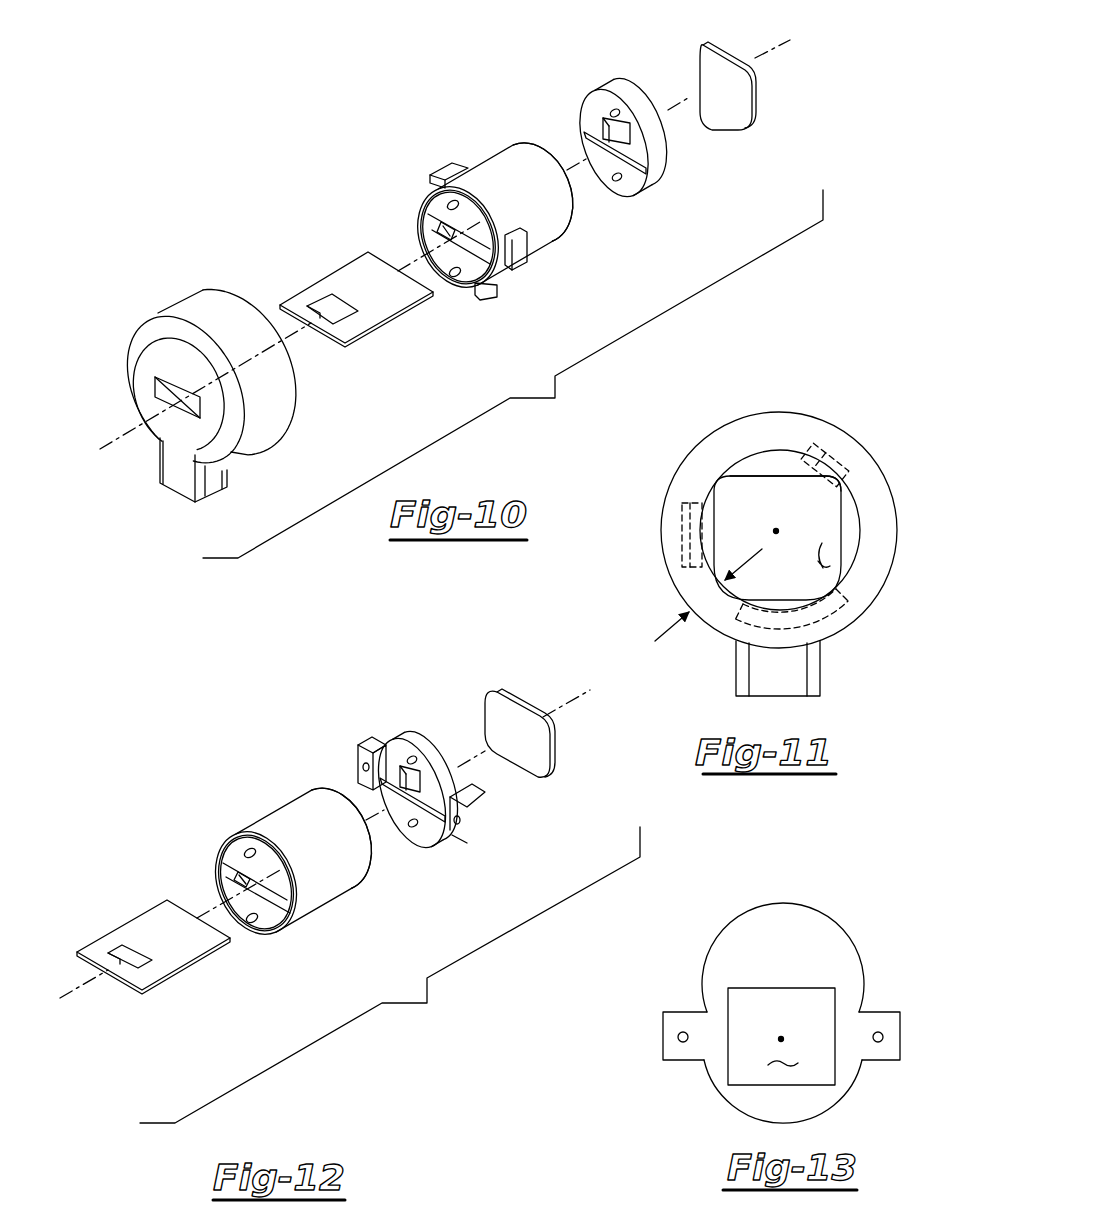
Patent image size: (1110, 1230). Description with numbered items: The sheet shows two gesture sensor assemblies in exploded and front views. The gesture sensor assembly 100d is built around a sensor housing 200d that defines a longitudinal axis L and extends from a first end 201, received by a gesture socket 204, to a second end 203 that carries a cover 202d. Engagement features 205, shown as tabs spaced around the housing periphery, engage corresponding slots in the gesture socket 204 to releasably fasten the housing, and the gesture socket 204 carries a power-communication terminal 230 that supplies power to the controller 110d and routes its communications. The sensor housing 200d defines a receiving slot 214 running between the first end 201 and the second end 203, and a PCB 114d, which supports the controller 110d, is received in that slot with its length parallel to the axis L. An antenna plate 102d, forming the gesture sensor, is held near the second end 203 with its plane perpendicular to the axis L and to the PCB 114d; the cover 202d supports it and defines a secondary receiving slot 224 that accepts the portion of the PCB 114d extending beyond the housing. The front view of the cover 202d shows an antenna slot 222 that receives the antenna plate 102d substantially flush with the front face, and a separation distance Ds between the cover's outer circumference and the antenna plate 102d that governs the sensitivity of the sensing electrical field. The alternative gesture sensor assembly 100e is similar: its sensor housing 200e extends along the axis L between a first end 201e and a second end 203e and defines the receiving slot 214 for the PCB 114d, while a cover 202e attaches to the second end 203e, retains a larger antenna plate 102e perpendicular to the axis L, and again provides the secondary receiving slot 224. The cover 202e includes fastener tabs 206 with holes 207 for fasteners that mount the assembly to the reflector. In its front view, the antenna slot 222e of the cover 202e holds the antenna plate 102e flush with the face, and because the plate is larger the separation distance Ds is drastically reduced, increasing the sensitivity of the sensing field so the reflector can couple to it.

In FIG. 10, the gesture sensor assembly 100d is at (513, 374).
In FIG. 11, the gesture sensor assembly 100d is at (800, 398).
In FIG. 12, the gesture sensor assembly 100e is at (390, 975).
In FIG. 13, the gesture sensor assembly 100e is at (797, 955).
In FIG. 10, the antenna plate 102d is at (717, 130).
In FIG. 11, the antenna plate 102d is at (818, 561).
In FIG. 12, the antenna plate 102e is at (517, 700).
In FIG. 13, the antenna plate 102e is at (782, 1066).
In FIG. 10, the controller 110d is at (322, 307).
In FIG. 12, the controller 110d is at (127, 950).
In FIG. 10, the PCB 114d is at (303, 303).
In FIG. 12, the PCB 114d is at (100, 948).
In FIG. 10, the sensor housing 200d is at (472, 173).
In FIG. 11, the sensor housing 200d is at (863, 447).
In FIG. 12, the sensor housing 200e is at (263, 823).
In FIG. 13, the sensor housing 200e is at (783, 1013).
In FIG. 10, the first end 201 is at (433, 203).
In FIG. 12, the first end 201e is at (215, 853).
In FIG. 10, the cover 202d is at (622, 95).
In FIG. 11, the cover 202d is at (714, 496).
In FIG. 12, the cover 202e is at (412, 747).
In FIG. 10, the second end 203 is at (580, 215).
In FIG. 12, the second end 203e is at (383, 860).
In FIG. 10, the gesture socket 204 is at (208, 308).
In FIG. 11, the gesture socket 204 is at (763, 427).
In FIG. 10, the engagement features 205 is at (435, 175).
In FIG. 12, the fastener tabs 206 is at (373, 742).
In FIG. 13, the fastener tabs 206 is at (688, 1012).
In FIG. 12, the holes 207 is at (360, 768).
In FIG. 13, the holes 207 is at (678, 1035).
In FIG. 10, the receiving slot 214 is at (480, 250).
In FIG. 12, the receiving slot 214 is at (257, 895).
In FIG. 11, the antenna slot 222 is at (843, 514).
In FIG. 13, the antenna slot 222e is at (765, 988).
In FIG. 10, the secondary receiving slot 224 is at (618, 150).
In FIG. 12, the secondary receiving slot 224 is at (415, 795).
In FIG. 10, the power-communication terminal 230 is at (180, 486).
In FIG. 11, the power-communication terminal 230 is at (801, 696).
In FIG. 10, the longitudinal axis L is at (790, 38).
In FIG. 11, the longitudinal axis L is at (776, 531).
In FIG. 12, the longitudinal axis L is at (562, 705).
In FIG. 13, the longitudinal axis L is at (781, 1039).
In FIG. 11, the separation distance Ds is at (708, 595).